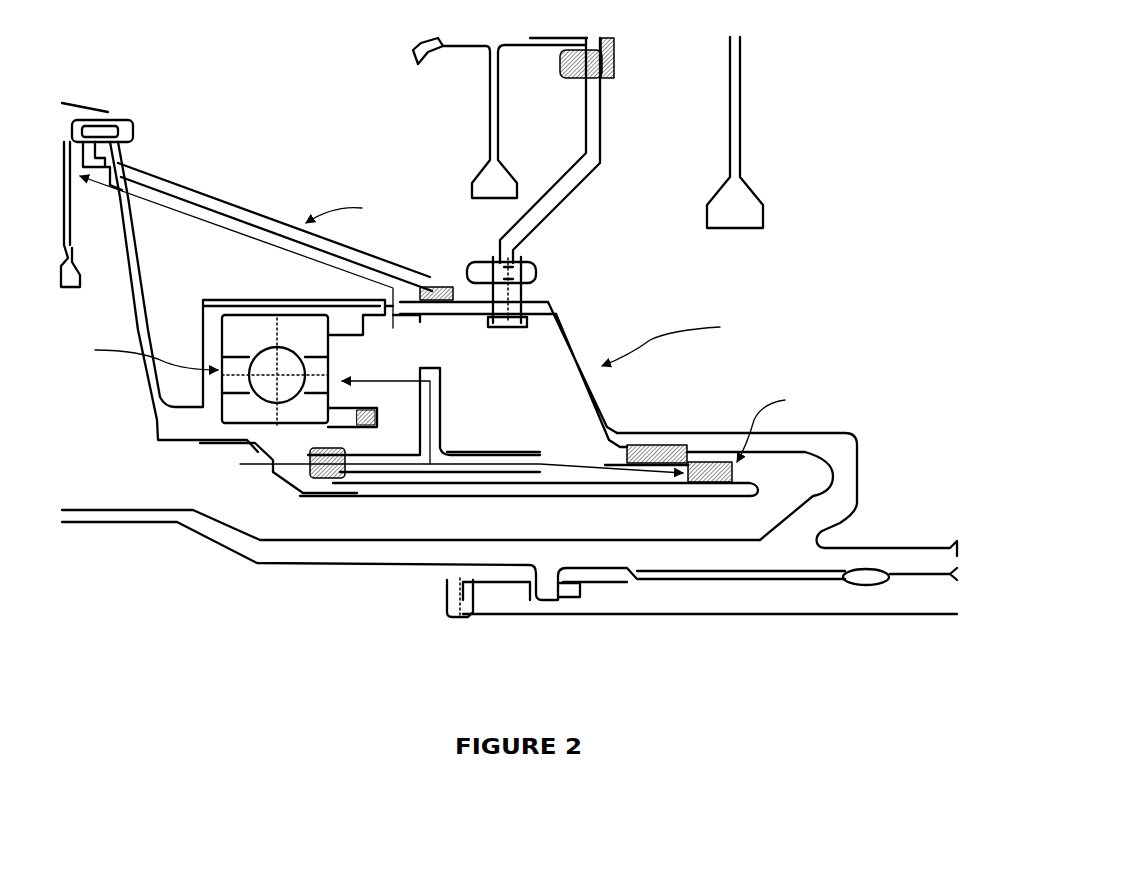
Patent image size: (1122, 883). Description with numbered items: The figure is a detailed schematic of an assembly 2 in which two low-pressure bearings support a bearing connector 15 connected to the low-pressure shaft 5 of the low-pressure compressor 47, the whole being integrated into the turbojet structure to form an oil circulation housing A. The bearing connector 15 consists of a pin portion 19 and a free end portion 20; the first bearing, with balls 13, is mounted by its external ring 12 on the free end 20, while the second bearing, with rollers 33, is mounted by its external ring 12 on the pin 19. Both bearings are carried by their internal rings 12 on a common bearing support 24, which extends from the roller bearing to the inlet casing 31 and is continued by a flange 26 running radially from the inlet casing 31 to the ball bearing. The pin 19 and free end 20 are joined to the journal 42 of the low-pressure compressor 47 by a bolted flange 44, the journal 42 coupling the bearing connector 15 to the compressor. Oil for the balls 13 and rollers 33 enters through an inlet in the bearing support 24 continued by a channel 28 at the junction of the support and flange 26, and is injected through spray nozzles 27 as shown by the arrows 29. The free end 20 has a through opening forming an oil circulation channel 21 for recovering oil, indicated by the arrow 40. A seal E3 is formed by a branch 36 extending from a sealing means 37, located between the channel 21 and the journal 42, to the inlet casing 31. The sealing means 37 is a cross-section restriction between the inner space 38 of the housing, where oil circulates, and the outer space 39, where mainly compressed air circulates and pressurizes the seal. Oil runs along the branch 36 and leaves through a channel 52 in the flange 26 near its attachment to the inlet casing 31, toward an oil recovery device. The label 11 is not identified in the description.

The assembly 2 is at (678, 297).
The low-pressure shaft 5 is at (313, 550).
The bearing housing 11 is at (247, 403).
The bearing ring 12 is at (247, 337).
The balls 13 is at (253, 373).
The bearing connector 15 is at (620, 427).
The pin portion 19 is at (829, 443).
The free end portion 20 is at (280, 307).
The oil circulation channel 21 is at (400, 308).
The bearing support 24 is at (300, 498).
The flange 26 is at (133, 275).
The spray nozzles 27 is at (420, 373).
The channel 28 is at (323, 468).
The oil supply arrows 29 is at (430, 403).
The inlet casing 31 is at (99, 113).
The rollers 33 is at (715, 473).
The branch 36 is at (240, 212).
The sealing means 37 is at (434, 287).
The inner space 38 is at (342, 324).
The outer space 39 is at (562, 132).
The oil recovery arrow 40 is at (197, 220).
The journal 42 is at (549, 200).
The bolted flange 44 is at (530, 270).
The low-pressure compressor 47 is at (611, 40).
The channel 52 is at (122, 187).
The oil circulation housing A is at (672, 340).
The seal E3 is at (350, 210).